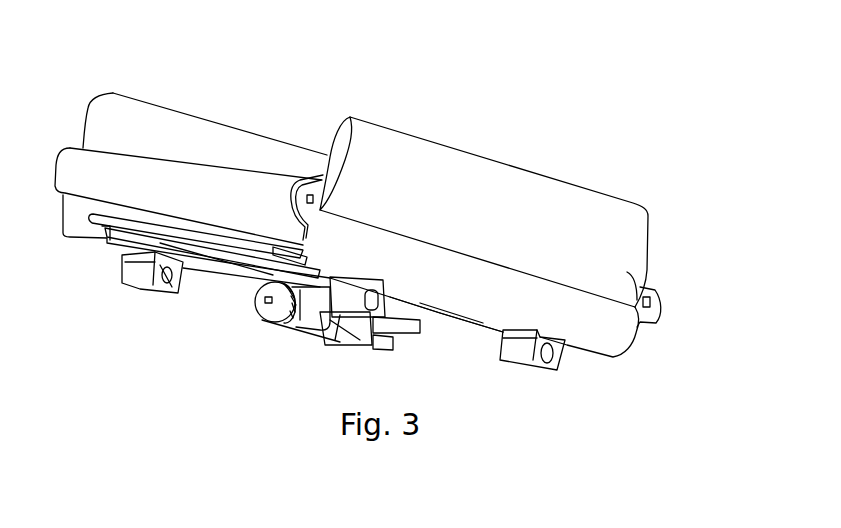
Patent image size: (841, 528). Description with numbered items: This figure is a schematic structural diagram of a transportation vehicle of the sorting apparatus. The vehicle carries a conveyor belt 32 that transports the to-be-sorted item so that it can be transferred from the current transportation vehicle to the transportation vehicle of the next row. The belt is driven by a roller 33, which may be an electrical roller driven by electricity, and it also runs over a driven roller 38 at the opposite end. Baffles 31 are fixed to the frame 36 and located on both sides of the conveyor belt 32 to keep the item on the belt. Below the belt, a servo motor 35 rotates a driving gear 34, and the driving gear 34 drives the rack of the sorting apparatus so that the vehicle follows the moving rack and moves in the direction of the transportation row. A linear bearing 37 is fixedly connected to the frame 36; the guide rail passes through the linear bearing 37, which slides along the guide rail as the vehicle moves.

The baffles 31 is at (132, 117).
The conveyor belt 32 is at (177, 187).
The roller 33 is at (350, 117).
The driving gear 34 is at (300, 284).
The servo motor 35 is at (407, 293).
The frame 36 is at (483, 297).
The linear bearing 37 is at (547, 333).
The driven roller 38 is at (637, 340).